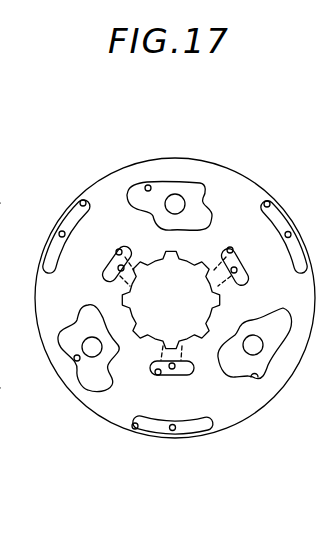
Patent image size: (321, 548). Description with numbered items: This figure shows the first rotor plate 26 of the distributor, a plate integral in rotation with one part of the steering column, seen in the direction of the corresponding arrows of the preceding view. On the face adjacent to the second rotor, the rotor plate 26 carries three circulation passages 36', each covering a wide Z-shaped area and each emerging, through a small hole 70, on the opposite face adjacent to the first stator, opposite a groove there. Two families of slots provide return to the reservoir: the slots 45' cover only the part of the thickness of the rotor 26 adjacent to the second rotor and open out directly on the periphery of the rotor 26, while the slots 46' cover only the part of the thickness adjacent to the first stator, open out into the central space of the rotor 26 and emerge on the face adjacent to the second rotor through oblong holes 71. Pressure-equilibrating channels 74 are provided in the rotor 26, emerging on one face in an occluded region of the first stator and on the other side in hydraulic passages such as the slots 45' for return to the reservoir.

The first rotor plate 26 is at (233, 167).
The circulation passages 36' is at (158, 294).
The slots 45' is at (175, 311).
The slots 46' is at (177, 327).
The small hole 70 is at (176, 200).
The oblong holes 71 is at (118, 250).
The pressure-equilibrating channels 74 is at (60, 232).